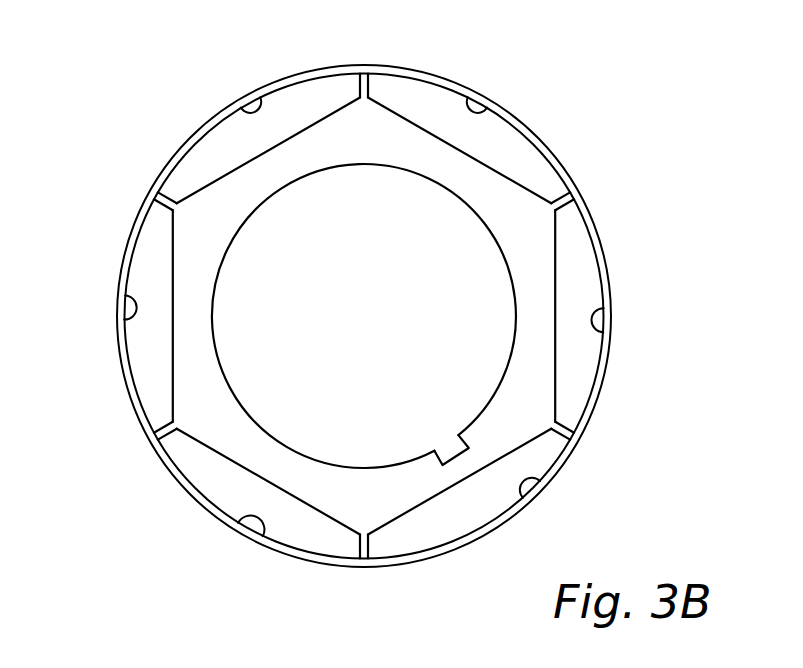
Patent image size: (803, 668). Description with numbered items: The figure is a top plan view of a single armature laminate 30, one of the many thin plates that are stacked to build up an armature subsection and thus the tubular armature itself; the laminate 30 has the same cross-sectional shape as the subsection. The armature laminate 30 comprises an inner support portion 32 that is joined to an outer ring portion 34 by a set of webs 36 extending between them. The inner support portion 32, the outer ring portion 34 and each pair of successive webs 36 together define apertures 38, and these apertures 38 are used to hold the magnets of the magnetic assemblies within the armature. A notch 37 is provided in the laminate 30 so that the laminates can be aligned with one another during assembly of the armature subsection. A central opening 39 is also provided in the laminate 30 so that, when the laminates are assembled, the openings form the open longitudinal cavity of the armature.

The armature laminate 30 is at (541, 131).
The inner support portion 32 is at (415, 125).
The outer ring portion 34 is at (605, 243).
The webs 36 is at (356, 84).
The notch 37 is at (455, 461).
The apertures 38 is at (241, 108).
The opening 39 is at (411, 171).